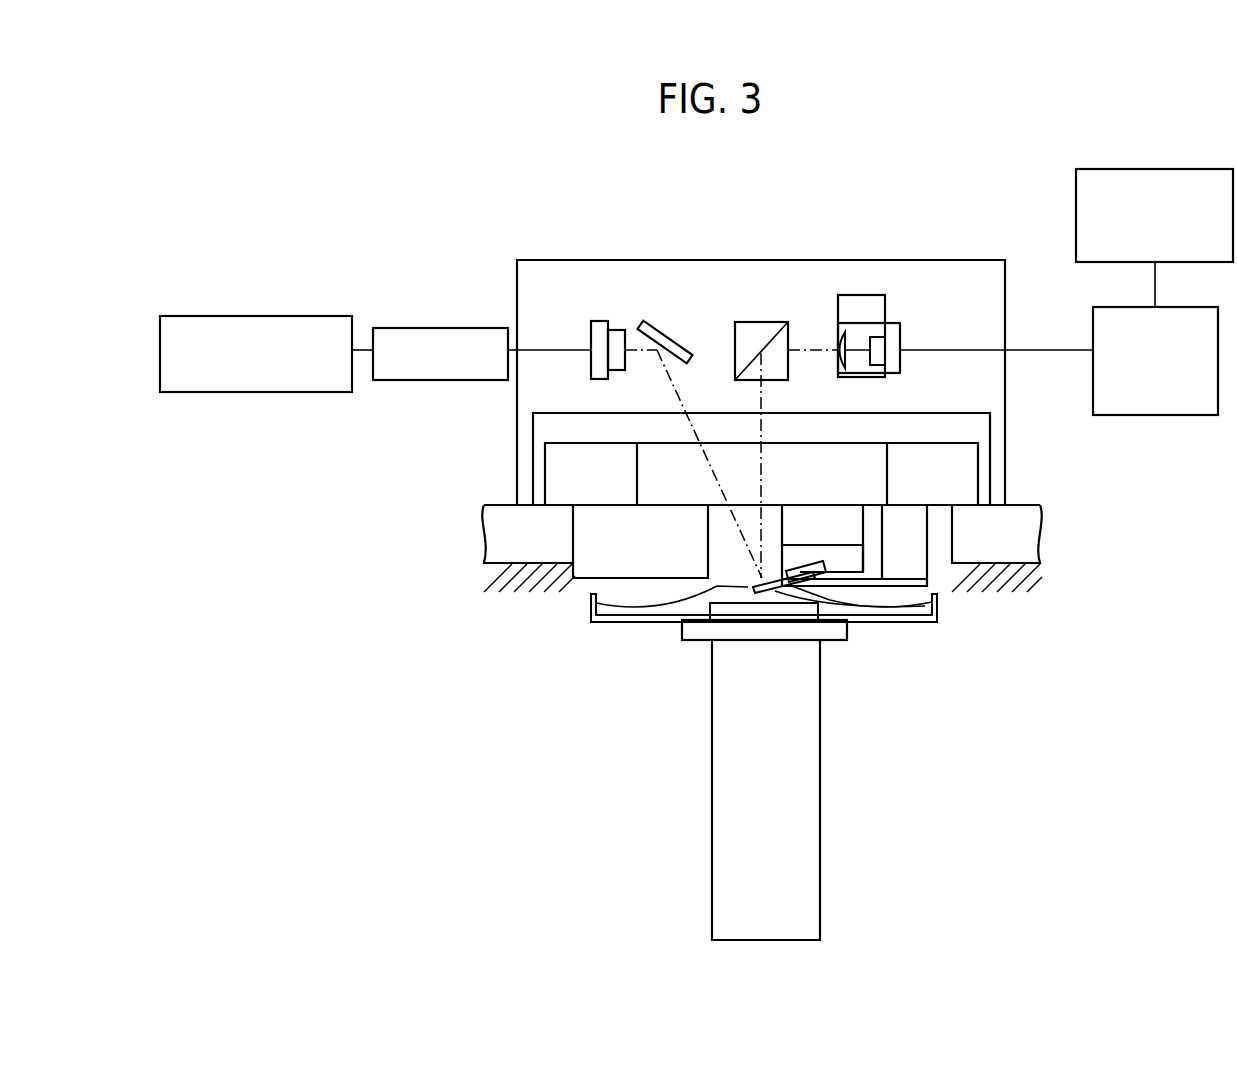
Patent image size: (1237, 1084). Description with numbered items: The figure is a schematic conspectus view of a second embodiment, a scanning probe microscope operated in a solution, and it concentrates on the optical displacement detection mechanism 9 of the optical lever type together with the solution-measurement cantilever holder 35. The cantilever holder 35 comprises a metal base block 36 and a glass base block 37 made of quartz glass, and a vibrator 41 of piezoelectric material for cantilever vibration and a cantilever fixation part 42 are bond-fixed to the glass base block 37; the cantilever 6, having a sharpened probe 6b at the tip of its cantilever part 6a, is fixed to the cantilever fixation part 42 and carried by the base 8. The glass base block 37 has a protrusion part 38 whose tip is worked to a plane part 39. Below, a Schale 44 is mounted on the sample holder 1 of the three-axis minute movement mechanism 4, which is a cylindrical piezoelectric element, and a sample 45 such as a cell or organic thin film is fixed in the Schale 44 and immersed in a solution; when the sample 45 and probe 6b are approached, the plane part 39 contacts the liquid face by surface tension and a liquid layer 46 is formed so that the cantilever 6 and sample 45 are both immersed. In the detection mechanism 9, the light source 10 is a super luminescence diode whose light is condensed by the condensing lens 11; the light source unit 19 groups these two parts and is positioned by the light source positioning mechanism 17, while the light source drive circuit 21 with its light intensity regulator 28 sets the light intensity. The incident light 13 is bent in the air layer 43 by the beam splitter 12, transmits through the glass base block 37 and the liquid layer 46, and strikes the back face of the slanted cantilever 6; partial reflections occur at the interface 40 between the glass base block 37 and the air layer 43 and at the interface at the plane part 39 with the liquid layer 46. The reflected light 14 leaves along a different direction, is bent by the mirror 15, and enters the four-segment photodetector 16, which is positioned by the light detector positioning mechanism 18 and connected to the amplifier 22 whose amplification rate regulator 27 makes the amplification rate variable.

The sample holder 1 is at (805, 640).
The three-axis minute movement mechanism 4 is at (800, 855).
The cantilever 6 is at (815, 585).
The cantilever part 6a is at (750, 578).
The probe 6b is at (760, 596).
The base 8 is at (1022, 536).
The optical displacement detection mechanism 9 is at (938, 173).
The light source 10 is at (895, 335).
The condensing lens 11 is at (838, 345).
The beam splitter 12 is at (758, 330).
The incident light 13 is at (762, 485).
The reflected light 14 is at (692, 432).
The mirror 15 is at (670, 337).
The photodetector 16 is at (619, 330).
The light source positioning mechanism 17 is at (872, 312).
The light detector positioning mechanism 18 is at (598, 322).
The light source unit 19 is at (870, 373).
The light source drive circuit 21 is at (1185, 415).
The amplifier 22 is at (420, 328).
The amplification rate regulator 27 is at (224, 316).
The light intensity regulator 28 is at (1185, 169).
The cantilever holder 35 is at (962, 469).
The metal base block 36 is at (555, 490).
The glass base block 37 is at (655, 470).
The protrusion part 38 is at (720, 539).
The plane part 39 is at (715, 578).
The interface 40 is at (757, 443).
The vibrator 41 is at (843, 523).
The cantilever fixation part 42 is at (850, 562).
The air layer 43 is at (826, 430).
The Schale 44 is at (596, 622).
The sample 45 is at (790, 620).
The liquid layer 46 is at (675, 606).